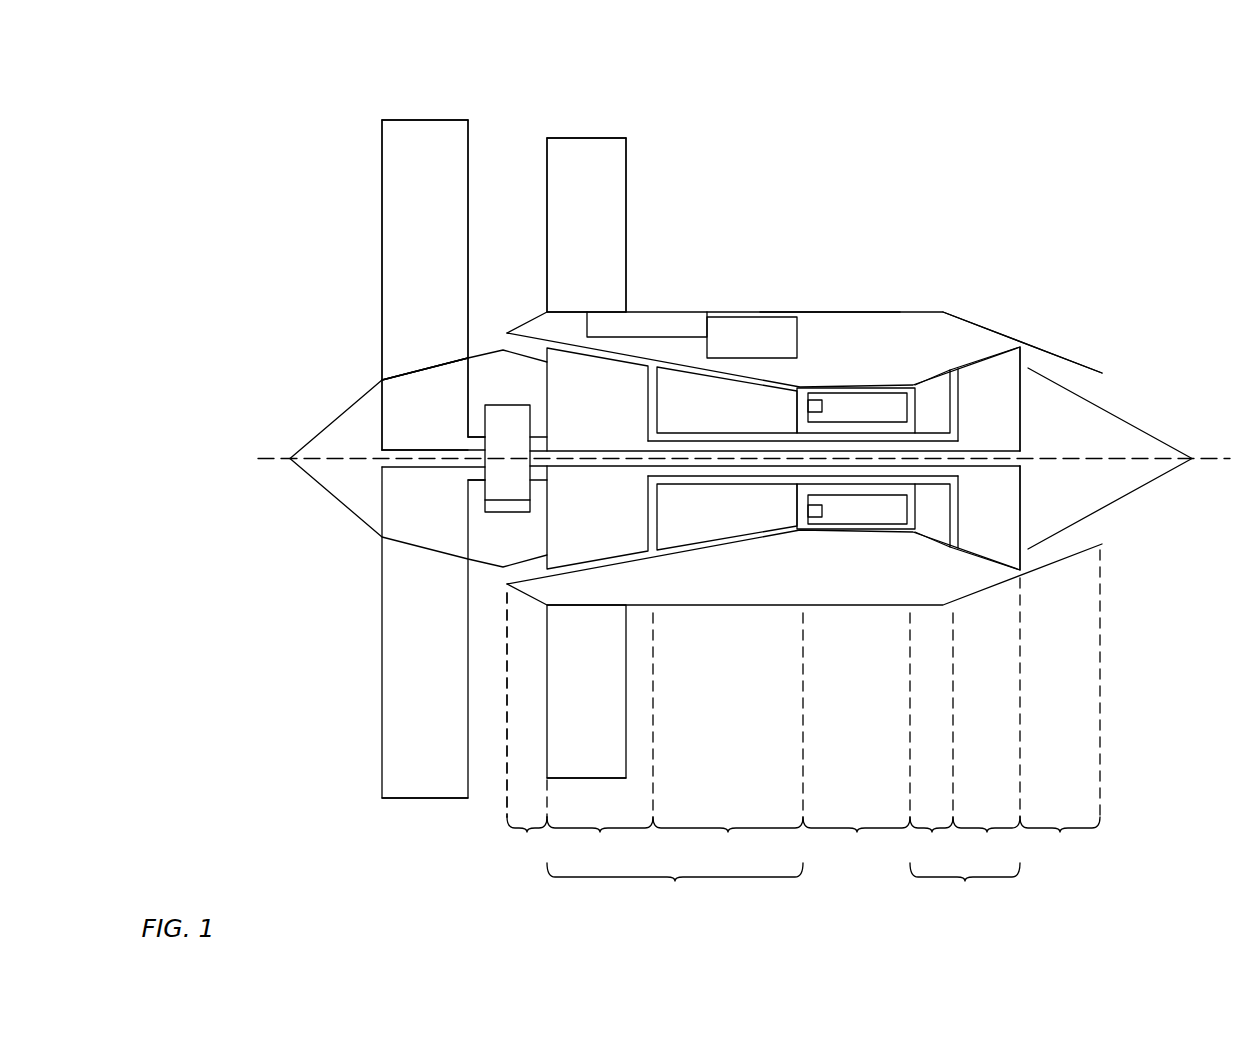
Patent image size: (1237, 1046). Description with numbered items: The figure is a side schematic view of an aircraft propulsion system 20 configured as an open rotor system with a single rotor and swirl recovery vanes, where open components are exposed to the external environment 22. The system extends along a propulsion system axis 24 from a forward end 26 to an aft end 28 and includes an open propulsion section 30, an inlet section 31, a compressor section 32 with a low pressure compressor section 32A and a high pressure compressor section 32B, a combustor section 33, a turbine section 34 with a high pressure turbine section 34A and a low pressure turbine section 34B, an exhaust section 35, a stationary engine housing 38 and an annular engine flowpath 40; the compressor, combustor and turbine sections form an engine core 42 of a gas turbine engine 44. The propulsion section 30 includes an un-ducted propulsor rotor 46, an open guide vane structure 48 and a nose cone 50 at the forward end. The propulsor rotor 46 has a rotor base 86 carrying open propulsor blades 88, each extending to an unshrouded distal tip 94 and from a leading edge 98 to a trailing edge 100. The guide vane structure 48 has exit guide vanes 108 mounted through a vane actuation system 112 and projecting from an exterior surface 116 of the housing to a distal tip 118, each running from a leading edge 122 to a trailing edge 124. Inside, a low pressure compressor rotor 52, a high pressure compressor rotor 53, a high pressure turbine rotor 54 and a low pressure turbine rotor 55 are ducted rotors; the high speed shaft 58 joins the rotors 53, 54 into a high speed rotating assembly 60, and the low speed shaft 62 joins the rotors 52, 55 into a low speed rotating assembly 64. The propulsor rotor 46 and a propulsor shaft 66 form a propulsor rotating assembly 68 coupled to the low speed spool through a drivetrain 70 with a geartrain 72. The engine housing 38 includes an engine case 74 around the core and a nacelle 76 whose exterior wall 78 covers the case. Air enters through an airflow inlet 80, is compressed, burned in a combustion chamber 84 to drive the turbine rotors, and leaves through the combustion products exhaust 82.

The aircraft propulsion system 20 is at (240, 123).
The external environment 22 is at (190, 255).
The propulsion system axis 24 is at (262, 474).
The forward end 26 is at (290, 458).
The aft end 28 is at (1132, 456).
The open propulsion section 30 is at (523, 112).
The inlet section 31 is at (527, 730).
The compressor section 32 is at (675, 765).
The low pressure compressor section 32A is at (600, 740).
The high pressure compressor section 32B is at (728, 740).
The combustor section 33 is at (856, 740).
The turbine section 34 is at (964, 748).
The high pressure turbine section 34A is at (932, 740).
The low pressure turbine section 34B is at (986, 723).
The exhaust section 35 is at (1060, 709).
The stationary engine housing 38 is at (804, 322).
The engine flowpath 40 is at (1050, 360).
The engine core 42 is at (803, 759).
The gas turbine engine 44 is at (466, 890).
The propulsor rotor 46 is at (401, 459).
The guide vane structure 48 is at (607, 431).
The nose cone 50 is at (394, 458).
The low pressure compressor rotor 52 is at (580, 421).
The high pressure compressor rotor 53 is at (702, 421).
The high pressure turbine rotor 54 is at (917, 421).
The low pressure turbine rotor 55 is at (977, 421).
The high speed shaft 58 is at (857, 430).
The high speed rotating assembly 60 is at (932, 410).
The low speed shaft 62 is at (857, 433).
The low speed rotating assembly 64 is at (985, 421).
The propulsor shaft 66 is at (473, 437).
The propulsor rotating assembly 68 is at (375, 410).
The drivetrain 70 is at (500, 515).
The geartrain 72 is at (495, 499).
The engine case 74 is at (856, 397).
The nacelle 76 is at (827, 272).
The exterior wall 78 is at (807, 312).
The airflow inlet 80 is at (507, 333).
The combustion products exhaust 82 is at (1100, 390).
The combustion chamber 84 is at (849, 524).
The rotor base 86 is at (410, 421).
The propulsor blades 88 is at (410, 254).
The distal tip 94 is at (423, 120).
The leading edge 98 is at (382, 227).
The trailing edge 100 is at (468, 200).
The exit guide vanes 108 is at (568, 240).
The vane actuation system 112 is at (734, 351).
The exterior surface 116 is at (604, 312).
The distal tip 118 is at (601, 137).
The leading edge 122 is at (545, 183).
The trailing edge 124 is at (626, 225).